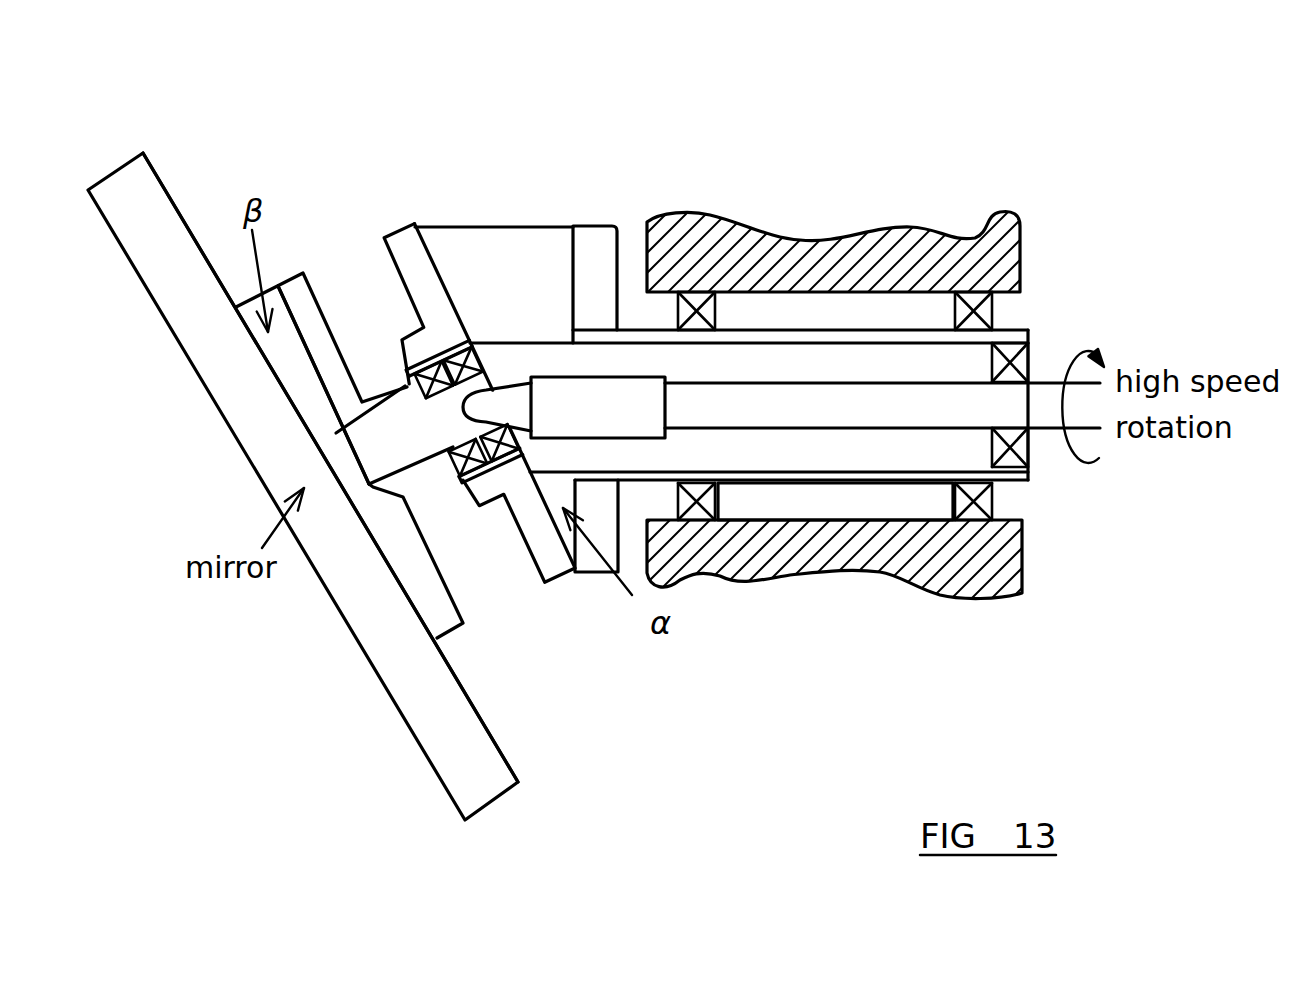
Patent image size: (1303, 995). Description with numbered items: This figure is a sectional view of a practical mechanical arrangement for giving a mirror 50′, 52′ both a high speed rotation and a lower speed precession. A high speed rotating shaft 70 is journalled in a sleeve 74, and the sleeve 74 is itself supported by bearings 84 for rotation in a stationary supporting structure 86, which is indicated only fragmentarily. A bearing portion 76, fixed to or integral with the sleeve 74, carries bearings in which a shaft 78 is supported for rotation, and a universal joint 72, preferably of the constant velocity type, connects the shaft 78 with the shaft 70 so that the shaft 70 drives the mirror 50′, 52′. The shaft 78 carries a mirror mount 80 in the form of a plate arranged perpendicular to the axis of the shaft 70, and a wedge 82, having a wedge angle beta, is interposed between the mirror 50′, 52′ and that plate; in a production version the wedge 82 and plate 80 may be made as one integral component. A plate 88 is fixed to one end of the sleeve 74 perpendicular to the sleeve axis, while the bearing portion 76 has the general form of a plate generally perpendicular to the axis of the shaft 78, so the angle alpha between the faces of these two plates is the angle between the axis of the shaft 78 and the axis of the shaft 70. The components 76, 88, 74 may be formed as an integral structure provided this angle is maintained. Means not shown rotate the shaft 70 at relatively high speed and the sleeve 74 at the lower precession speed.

The mirror 50′ is at (387, 645).
The mirror 52′ is at (337, 677).
The high speed rotating shaft 70 is at (1033, 407).
The universal joint 72 is at (513, 407).
The sleeve 74 is at (770, 313).
The bearing portion 76 is at (413, 253).
The shaft 78 is at (478, 560).
The mirror mount 80 is at (308, 308).
The wedge 82 is at (296, 375).
The bearings 84 is at (697, 505).
The stationary supporting structure 86 is at (882, 267).
The plate 88 is at (592, 257).